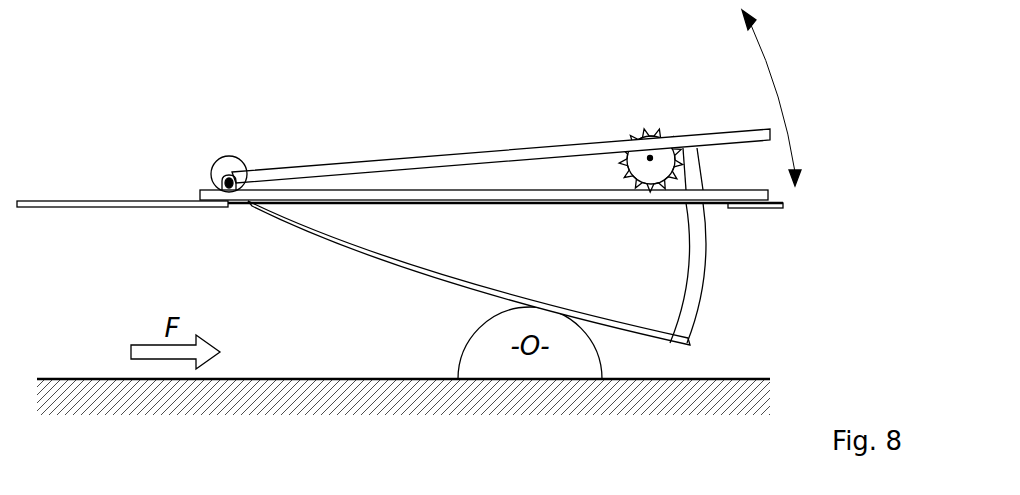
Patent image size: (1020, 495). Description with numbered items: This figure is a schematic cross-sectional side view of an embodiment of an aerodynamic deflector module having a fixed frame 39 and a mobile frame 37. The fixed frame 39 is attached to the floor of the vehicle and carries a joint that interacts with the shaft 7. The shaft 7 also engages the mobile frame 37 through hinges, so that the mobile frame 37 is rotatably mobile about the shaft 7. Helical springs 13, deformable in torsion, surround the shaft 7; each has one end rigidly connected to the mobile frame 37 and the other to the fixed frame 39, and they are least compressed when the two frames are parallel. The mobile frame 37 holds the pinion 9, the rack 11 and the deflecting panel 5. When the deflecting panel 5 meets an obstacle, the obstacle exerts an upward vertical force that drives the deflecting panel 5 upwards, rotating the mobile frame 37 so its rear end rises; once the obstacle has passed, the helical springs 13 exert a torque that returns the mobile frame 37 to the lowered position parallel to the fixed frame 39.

The deflecting panel 5 is at (356, 257).
The shaft 7 is at (230, 158).
The pinion 9 is at (642, 130).
The rack 11 is at (702, 300).
The helical springs 13 is at (245, 157).
The mobile frame 37 is at (425, 157).
The fixed frame 39 is at (515, 190).